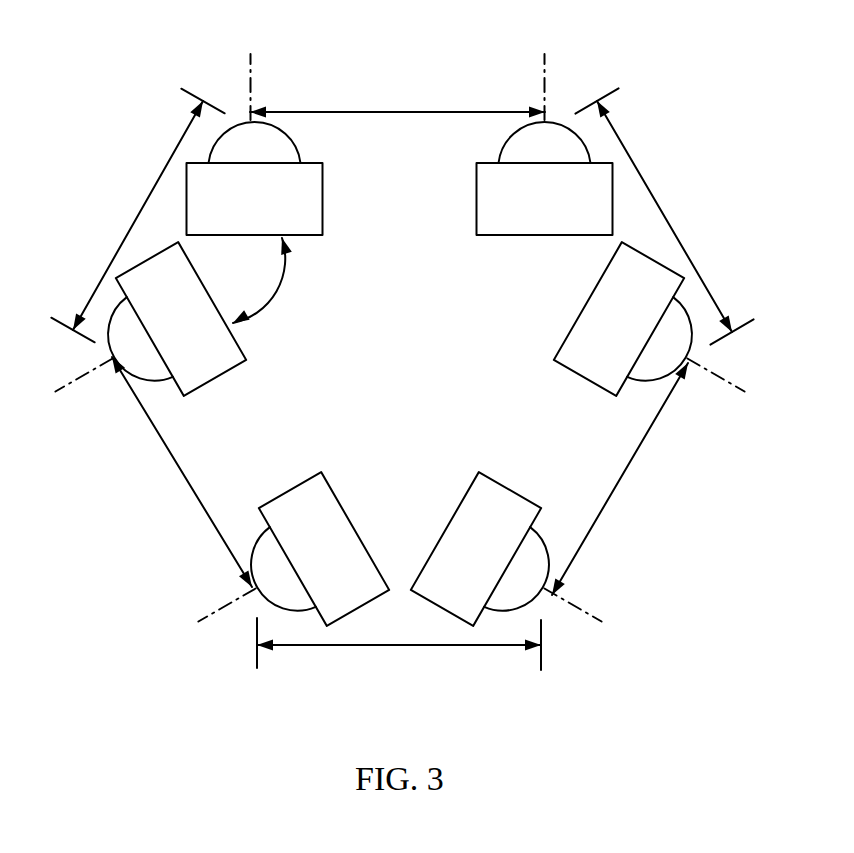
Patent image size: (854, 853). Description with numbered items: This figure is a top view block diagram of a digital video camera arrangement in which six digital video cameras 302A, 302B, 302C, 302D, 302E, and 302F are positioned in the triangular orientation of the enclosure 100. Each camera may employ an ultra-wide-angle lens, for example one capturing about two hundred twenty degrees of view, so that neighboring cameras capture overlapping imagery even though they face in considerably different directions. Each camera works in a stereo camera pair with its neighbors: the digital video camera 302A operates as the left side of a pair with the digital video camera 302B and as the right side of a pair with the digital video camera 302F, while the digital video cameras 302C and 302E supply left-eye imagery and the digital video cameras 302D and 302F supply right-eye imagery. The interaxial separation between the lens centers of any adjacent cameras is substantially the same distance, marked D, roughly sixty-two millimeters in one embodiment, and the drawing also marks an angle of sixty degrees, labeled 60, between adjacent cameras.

The enclosure 100 is at (138, 62).
The digital video camera 302A is at (323, 207).
The digital video camera 302B is at (477, 190).
The digital video camera 302C is at (571, 324).
The digital video camera 302D is at (520, 461).
The digital video camera 302E is at (297, 483).
The digital video camera 302F is at (245, 349).
The angle between adjacent sensor units (60 degrees) 60 is at (267, 280).